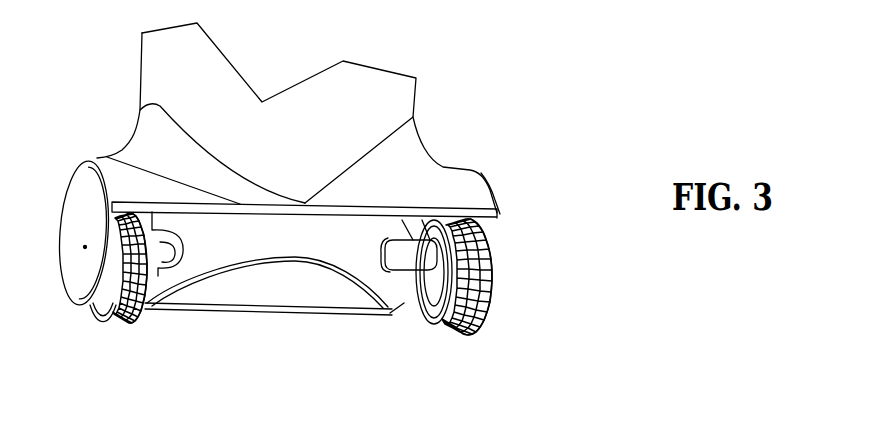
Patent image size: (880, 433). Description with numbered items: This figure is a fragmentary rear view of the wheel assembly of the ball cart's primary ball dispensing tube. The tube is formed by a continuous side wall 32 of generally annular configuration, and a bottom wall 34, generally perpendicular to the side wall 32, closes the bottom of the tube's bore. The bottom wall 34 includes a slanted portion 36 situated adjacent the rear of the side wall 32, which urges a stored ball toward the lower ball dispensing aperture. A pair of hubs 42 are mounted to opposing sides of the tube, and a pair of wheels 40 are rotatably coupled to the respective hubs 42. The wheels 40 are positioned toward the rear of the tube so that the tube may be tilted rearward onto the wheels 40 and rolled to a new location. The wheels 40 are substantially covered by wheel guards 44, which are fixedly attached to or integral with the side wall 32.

The side wall 32 is at (362, 73).
The bottom wall 34 is at (267, 313).
The slanted portion 36 is at (330, 293).
The wheels 40 is at (112, 323).
The hubs 42 is at (157, 257).
The wheel guards 44 is at (85, 170).